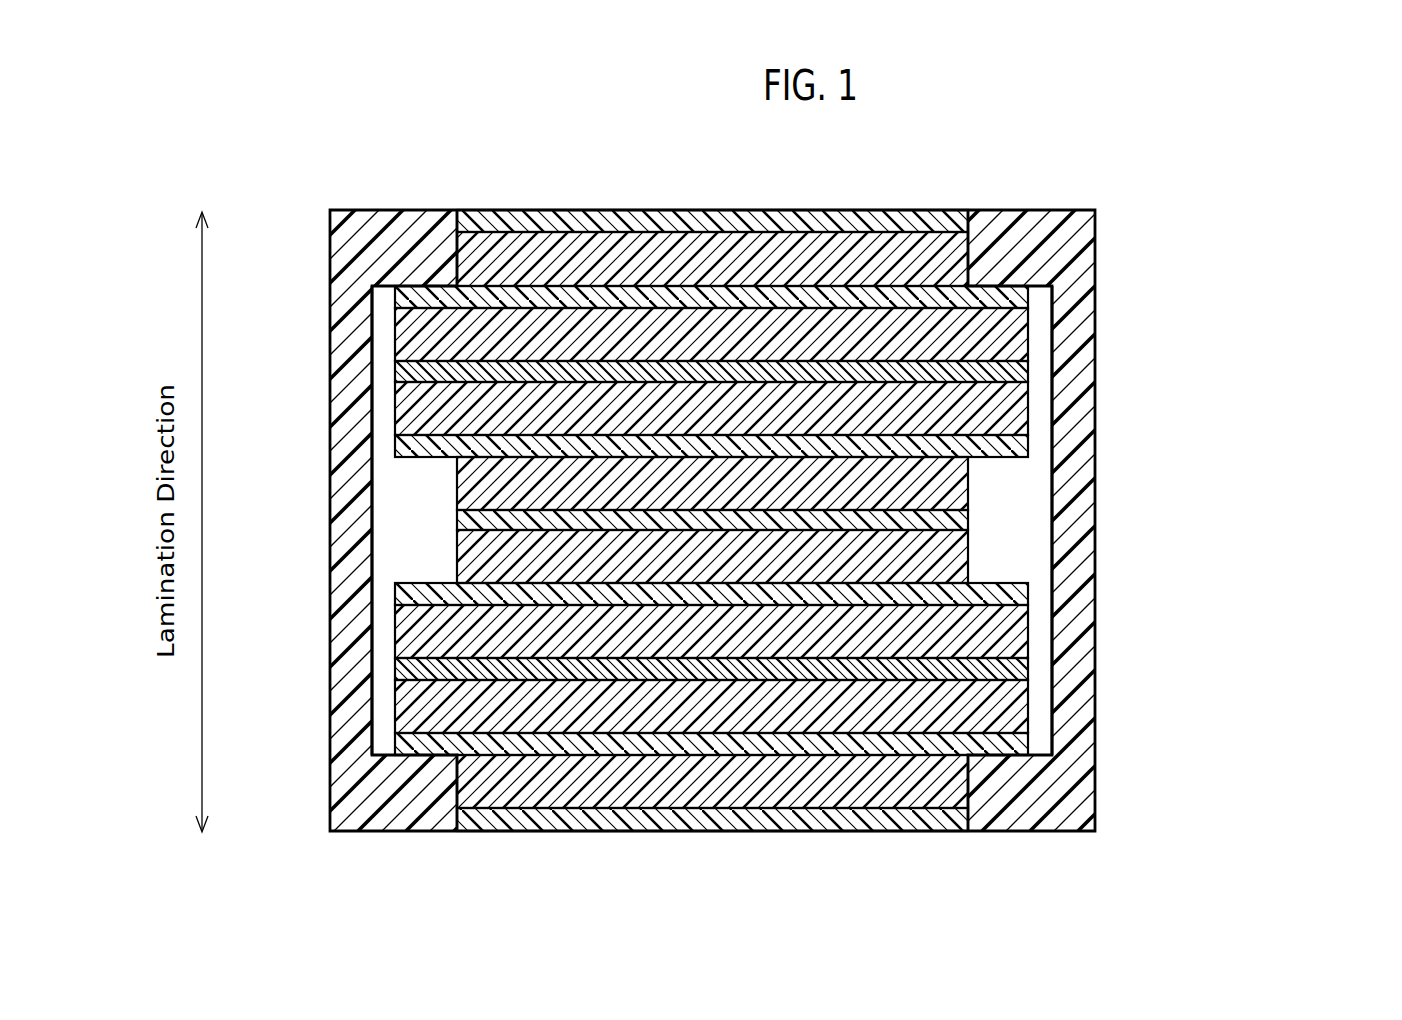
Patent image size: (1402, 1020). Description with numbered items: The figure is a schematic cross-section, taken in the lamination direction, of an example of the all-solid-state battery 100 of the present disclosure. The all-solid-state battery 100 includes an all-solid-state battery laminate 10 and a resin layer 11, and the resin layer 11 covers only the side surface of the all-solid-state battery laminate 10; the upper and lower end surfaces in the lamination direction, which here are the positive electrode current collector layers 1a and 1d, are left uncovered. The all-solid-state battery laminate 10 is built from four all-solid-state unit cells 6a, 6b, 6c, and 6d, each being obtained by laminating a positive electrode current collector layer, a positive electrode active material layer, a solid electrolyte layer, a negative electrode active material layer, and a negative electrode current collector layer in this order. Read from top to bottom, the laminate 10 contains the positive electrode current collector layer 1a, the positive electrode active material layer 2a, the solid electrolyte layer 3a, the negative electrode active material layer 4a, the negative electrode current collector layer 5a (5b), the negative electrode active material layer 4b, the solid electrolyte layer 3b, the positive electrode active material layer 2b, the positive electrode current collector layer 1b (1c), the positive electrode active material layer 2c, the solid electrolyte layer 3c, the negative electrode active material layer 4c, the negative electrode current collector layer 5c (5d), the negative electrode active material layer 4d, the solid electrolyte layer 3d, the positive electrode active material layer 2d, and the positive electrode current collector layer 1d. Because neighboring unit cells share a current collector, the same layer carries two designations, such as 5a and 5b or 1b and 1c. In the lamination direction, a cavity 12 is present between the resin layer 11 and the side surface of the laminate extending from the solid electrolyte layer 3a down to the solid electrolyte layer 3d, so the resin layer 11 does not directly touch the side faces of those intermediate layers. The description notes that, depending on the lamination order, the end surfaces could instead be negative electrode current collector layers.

The all-solid-state battery 100 is at (324, 149).
The all-solid-state battery laminate 10 is at (1330, 210).
The resin layer 11 is at (352, 256).
The cavity 12 is at (413, 531).
The positive electrode current collector layer 1a is at (940, 222).
The positive electrode current collector layer 1b is at (940, 520).
The positive electrode current collector layer 1c is at (833, 542).
The positive electrode current collector layer 1d is at (935, 820).
The positive electrode active material layer 2a is at (928, 262).
The positive electrode active material layer 2b is at (940, 485).
The positive electrode active material layer 2c is at (940, 555).
The positive electrode active material layer 2d is at (940, 782).
The solid electrolyte layer 3a is at (987, 297).
The solid electrolyte layer 3b is at (985, 447).
The solid electrolyte layer 3c is at (995, 595).
The solid electrolyte layer 3d is at (1000, 745).
The negative electrode active material layer 4a is at (985, 335).
The negative electrode active material layer 4b is at (985, 408).
The negative electrode active material layer 4c is at (1000, 636).
The negative electrode active material layer 4d is at (1000, 708).
The negative electrode current collector layer 5a is at (997, 371).
The negative electrode current collector layer 5b is at (789, 386).
The negative electrode current collector layer 5c is at (1000, 668).
The negative electrode current collector layer 5d is at (817, 697).
The all-solid-state unit cell 6a is at (1176, 210).
The all-solid-state unit cell 6b is at (1201, 352).
The all-solid-state unit cell 6c is at (1231, 513).
The all-solid-state unit cell 6d is at (1260, 678).